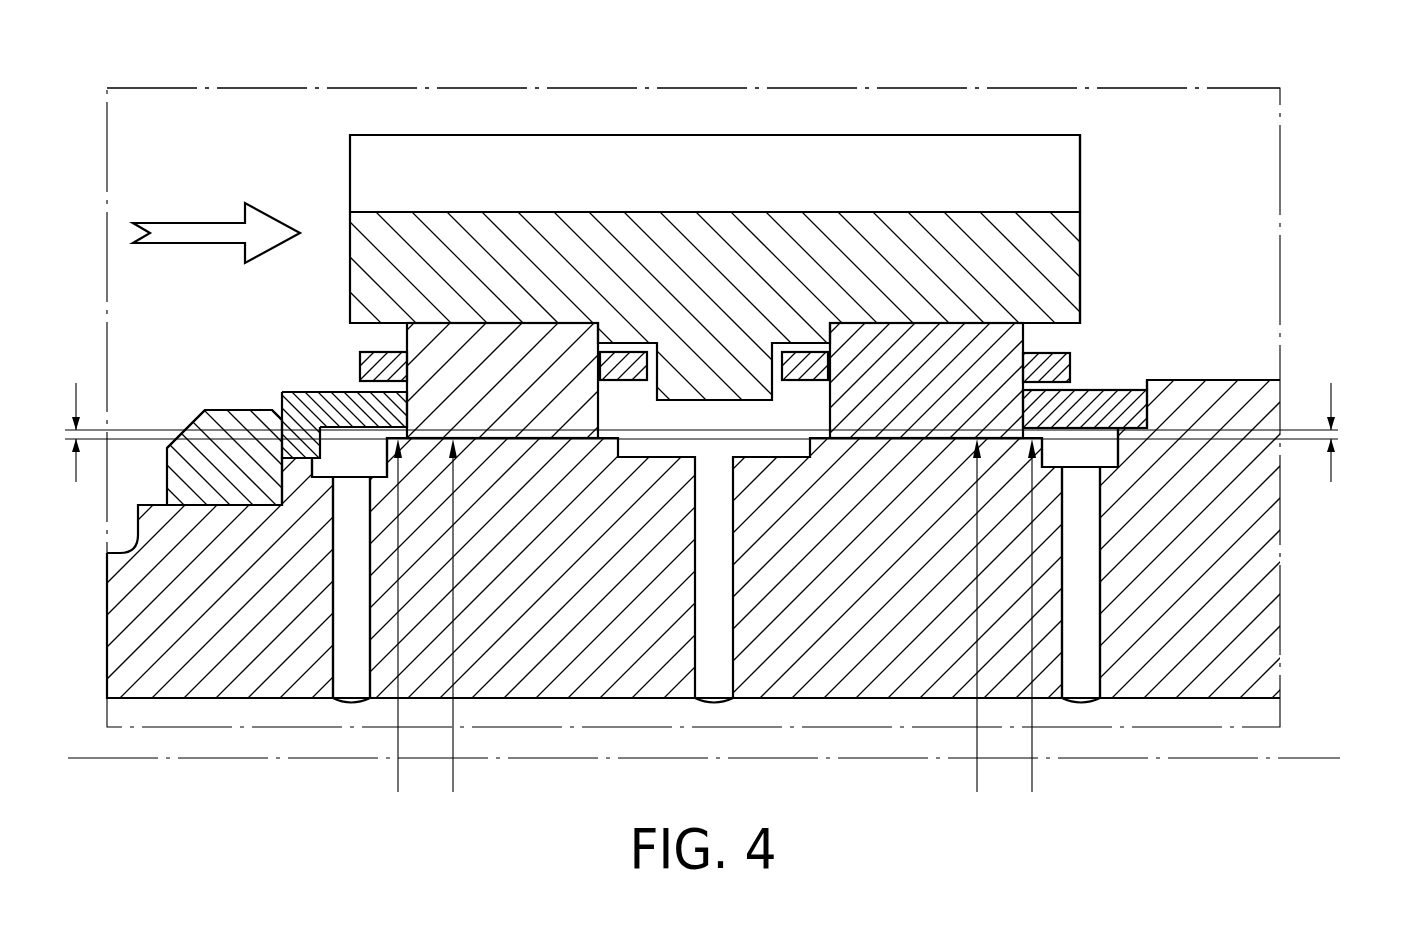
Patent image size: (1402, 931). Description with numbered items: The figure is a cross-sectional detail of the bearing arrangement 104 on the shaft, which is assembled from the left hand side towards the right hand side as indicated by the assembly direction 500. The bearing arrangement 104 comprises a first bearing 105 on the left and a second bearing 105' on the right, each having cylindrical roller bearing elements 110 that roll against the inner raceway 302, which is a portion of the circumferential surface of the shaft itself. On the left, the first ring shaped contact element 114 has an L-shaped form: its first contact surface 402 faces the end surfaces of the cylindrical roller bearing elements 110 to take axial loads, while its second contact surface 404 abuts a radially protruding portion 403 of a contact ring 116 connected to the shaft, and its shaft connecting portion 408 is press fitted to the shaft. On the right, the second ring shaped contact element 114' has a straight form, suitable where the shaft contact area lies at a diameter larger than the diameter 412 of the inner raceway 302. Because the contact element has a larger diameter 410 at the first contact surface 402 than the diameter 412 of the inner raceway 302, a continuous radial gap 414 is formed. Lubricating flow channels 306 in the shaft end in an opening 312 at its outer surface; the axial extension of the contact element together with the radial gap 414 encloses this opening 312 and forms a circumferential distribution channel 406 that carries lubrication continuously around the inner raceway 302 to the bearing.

The bearing arrangement 104 is at (266, 147).
The assembly direction 500 is at (185, 222).
The first bearing 105 is at (700, 202).
The second bearing 105' is at (981, 178).
The cylindrical roller bearing elements 110 is at (483, 350).
The first contact surface 402 is at (407, 406).
The inner raceway 302 is at (556, 438).
The first ring shaped contact element 114 is at (344, 362).
The second ring shaped contact element 114' is at (1088, 328).
The shaft connecting portion 408 is at (300, 455).
The second contact surface 404 is at (258, 420).
The radially protruding portion 403 is at (240, 458).
The contact ring 116 is at (216, 468).
The circumferential distribution channel 406 is at (352, 446).
The opening 312 is at (350, 480).
The lubricating flow channels 306 is at (350, 553).
The continuous radial gap 414 is at (704, 432).
The larger diameter 410 is at (395, 765).
The diameter of the inner raceway 412 is at (448, 767).